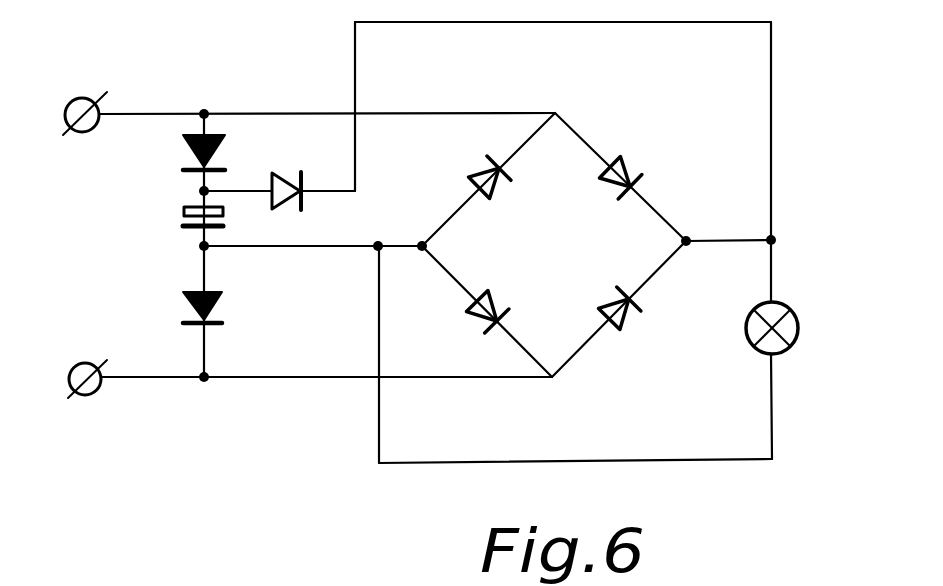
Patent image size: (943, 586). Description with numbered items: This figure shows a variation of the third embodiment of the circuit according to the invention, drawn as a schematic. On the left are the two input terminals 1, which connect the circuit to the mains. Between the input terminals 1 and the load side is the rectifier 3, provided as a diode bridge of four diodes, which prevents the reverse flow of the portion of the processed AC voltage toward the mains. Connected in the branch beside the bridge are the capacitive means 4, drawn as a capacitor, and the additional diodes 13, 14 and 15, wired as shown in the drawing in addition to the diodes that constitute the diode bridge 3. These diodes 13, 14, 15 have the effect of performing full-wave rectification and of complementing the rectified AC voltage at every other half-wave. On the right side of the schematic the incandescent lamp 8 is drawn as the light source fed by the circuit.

The input terminals 1 is at (75, 95).
The diode 13 is at (185, 142).
The capacitive means 4 is at (180, 215).
The diode 14 is at (182, 297).
The diode 15 is at (288, 173).
The rectifier 3 is at (573, 162).
The incandescent lamp 8 is at (783, 302).